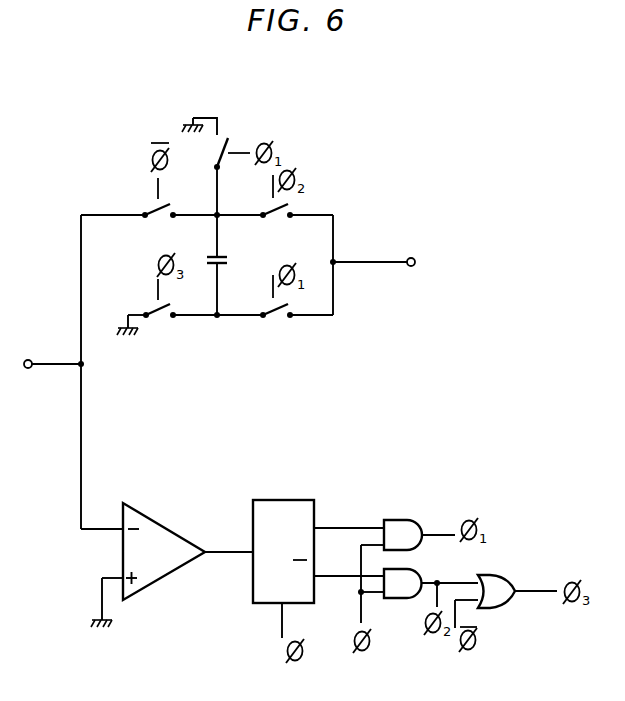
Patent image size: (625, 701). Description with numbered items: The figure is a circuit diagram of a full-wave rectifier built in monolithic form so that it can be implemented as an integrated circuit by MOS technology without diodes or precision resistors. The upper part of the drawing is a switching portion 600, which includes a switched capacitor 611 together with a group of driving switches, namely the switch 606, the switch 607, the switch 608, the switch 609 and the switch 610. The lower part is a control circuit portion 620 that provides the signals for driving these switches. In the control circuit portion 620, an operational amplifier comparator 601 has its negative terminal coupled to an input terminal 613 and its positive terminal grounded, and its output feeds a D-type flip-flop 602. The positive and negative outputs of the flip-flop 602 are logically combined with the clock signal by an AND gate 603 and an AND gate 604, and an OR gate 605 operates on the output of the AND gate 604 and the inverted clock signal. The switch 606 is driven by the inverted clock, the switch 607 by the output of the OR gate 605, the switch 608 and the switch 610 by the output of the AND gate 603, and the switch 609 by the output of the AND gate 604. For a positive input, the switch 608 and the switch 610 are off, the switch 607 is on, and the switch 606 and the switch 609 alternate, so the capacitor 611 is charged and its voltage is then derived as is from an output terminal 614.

The switching portion 600 is at (298, 203).
The operational amplifier comparator 601 is at (191, 562).
The D-type flip-flop 602 is at (272, 500).
The AND gate 603 is at (400, 518).
The AND gate 604 is at (418, 570).
The OR gate 605 is at (497, 575).
The switch 606 is at (169, 203).
The switch 607 is at (146, 304).
The switch 608 is at (233, 135).
The switch 609 is at (276, 223).
The switch 610 is at (275, 318).
The switched capacitor 611 is at (205, 256).
The input terminal 613 is at (34, 352).
The output terminal 614 is at (416, 250).
The control circuit portion 620 is at (315, 500).